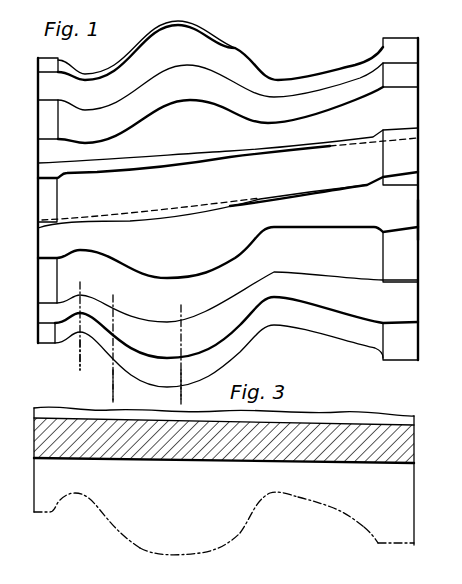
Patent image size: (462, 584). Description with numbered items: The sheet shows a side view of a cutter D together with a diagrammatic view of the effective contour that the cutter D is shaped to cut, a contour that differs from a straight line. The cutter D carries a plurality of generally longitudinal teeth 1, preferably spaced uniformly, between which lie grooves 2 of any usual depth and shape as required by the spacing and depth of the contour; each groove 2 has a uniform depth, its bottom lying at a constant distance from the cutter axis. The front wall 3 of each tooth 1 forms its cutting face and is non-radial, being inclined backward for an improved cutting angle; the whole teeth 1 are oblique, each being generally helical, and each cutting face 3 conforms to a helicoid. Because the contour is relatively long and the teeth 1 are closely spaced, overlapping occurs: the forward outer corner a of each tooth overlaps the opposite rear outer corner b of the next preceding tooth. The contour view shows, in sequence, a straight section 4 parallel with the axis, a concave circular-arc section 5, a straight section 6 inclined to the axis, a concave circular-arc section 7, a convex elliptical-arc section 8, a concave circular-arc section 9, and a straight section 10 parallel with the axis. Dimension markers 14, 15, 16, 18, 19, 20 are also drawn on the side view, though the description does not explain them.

In FIG. 1, the cutter D is at (260, 65).
In FIG. 3, the cutter D is at (299, 423).
In FIG. 1, the tooth 1 is at (402, 153).
In FIG. 1, the groove 2 is at (326, 210).
In FIG. 3, the groove 2 is at (398, 515).
In FIG. 1, the front wall 3 is at (386, 183).
In FIG. 1, the forward outer corner a is at (40, 228).
In FIG. 1, the rear outer corner b is at (418, 222).
In FIG. 1, the section line 14 is at (181, 310).
In FIG. 1, the section line 15 is at (113, 298).
In FIG. 1, the section line 16 is at (80, 285).
In FIG. 1, the dimension 18 is at (193, 402).
In FIG. 1, the dimension 19 is at (125, 400).
In FIG. 1, the dimension 20 is at (92, 368).
In FIG. 3, the straight section 4 is at (398, 545).
In FIG. 3, the concave section 5 is at (372, 535).
In FIG. 3, the straight section 6 is at (323, 508).
In FIG. 3, the concave section 7 is at (262, 497).
In FIG. 3, the convex section 8 is at (200, 552).
In FIG. 3, the concave section 9 is at (84, 497).
In FIG. 3, the straight section 10 is at (42, 514).